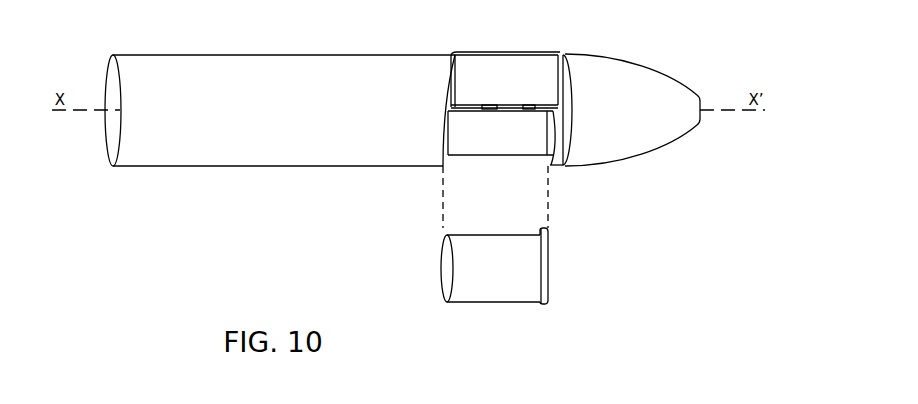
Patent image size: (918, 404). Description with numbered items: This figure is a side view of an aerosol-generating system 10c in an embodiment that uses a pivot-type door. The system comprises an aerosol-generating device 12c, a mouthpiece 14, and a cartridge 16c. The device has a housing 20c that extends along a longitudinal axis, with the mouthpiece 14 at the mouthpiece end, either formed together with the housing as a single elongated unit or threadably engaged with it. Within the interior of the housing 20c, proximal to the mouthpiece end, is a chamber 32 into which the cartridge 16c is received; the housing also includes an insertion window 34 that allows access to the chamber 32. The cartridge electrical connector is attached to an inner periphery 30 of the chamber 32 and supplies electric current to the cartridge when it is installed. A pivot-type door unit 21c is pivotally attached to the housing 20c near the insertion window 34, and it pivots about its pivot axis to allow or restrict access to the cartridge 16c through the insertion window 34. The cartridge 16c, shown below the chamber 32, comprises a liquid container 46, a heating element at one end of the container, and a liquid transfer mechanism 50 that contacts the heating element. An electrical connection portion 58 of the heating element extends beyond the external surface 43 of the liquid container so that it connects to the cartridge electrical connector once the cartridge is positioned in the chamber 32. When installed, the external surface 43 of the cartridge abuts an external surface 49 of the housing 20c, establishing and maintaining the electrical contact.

The aerosol-generating system 10c is at (172, 220).
The aerosol-generating device 12c is at (152, 168).
The mouthpiece 14 is at (660, 72).
The cartridge 16c is at (439, 242).
The housing 20c is at (280, 167).
The pivot-type door unit 21c is at (535, 50).
The inner periphery 30 is at (458, 155).
The chamber 32 is at (511, 140).
The insertion window 34 is at (524, 162).
The external surface 43 is at (518, 303).
The liquid container 46 is at (443, 278).
The external surface 49 is at (347, 167).
The liquid transfer mechanism 50 is at (548, 268).
The electrical connection portion 58 is at (533, 231).